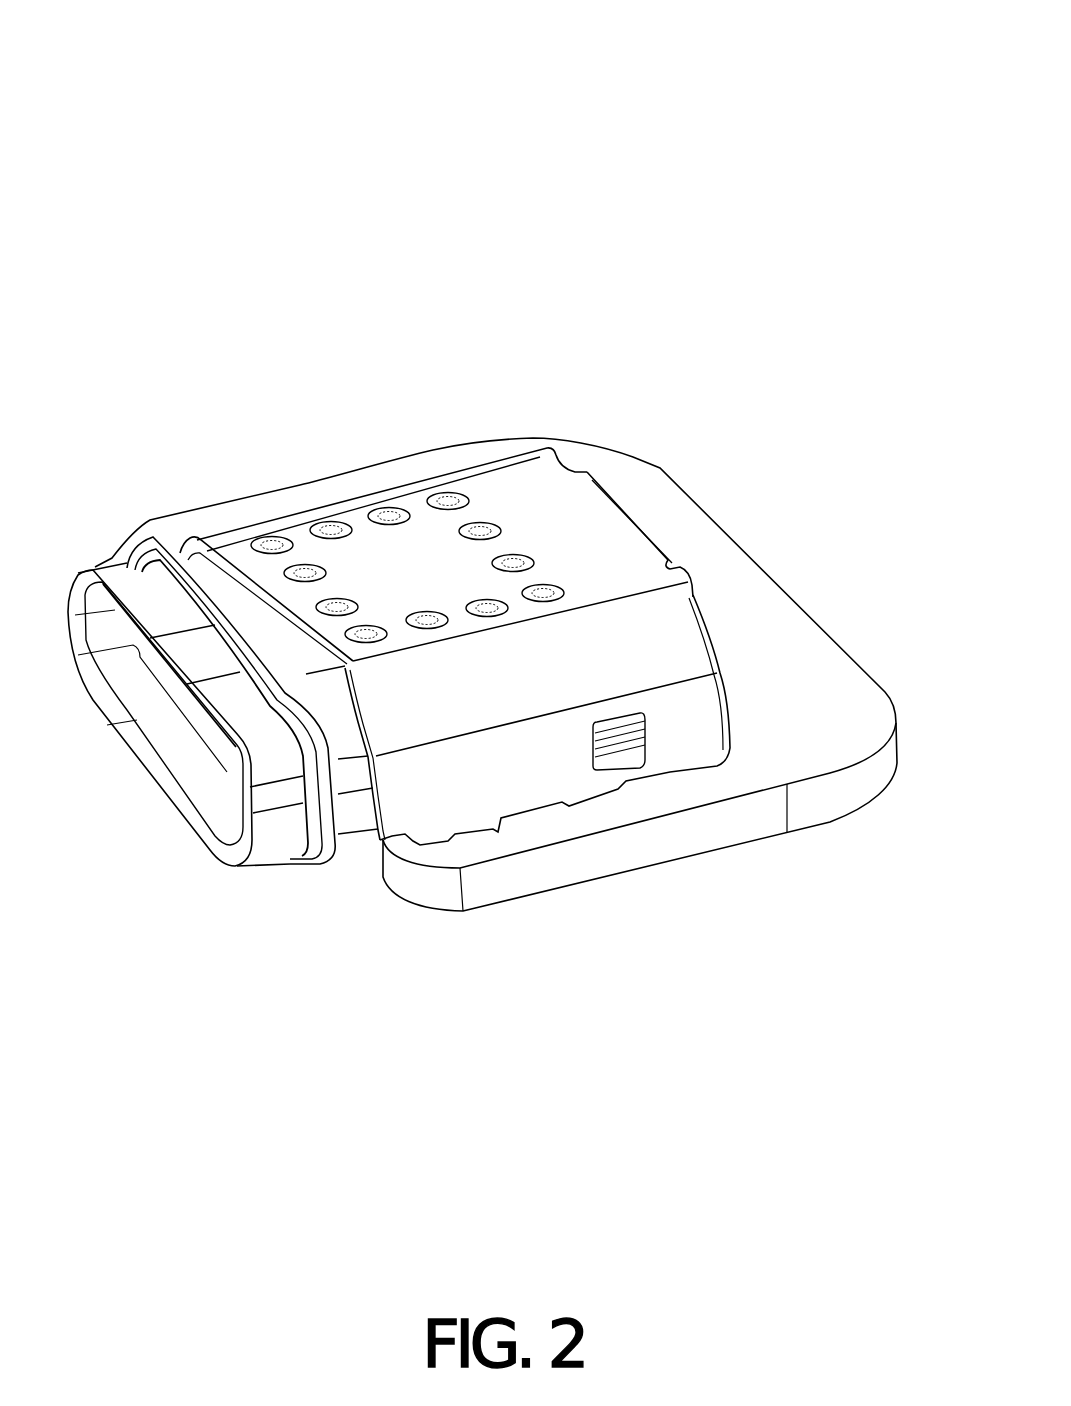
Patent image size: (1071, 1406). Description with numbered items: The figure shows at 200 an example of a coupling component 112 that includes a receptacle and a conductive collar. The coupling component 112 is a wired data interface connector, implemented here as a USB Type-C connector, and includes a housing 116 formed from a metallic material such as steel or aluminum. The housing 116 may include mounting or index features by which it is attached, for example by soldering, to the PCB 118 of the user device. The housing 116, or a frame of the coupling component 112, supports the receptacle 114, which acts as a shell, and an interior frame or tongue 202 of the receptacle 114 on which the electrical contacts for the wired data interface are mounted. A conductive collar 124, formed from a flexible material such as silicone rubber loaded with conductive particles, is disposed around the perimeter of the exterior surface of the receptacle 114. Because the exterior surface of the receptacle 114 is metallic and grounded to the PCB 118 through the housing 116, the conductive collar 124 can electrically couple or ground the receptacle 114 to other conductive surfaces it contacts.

The example of the coupling component 200 is at (488, 458).
The coupling component 112 is at (400, 612).
The receptacle 114 is at (210, 728).
The housing 116 is at (626, 508).
The PCB 118 is at (838, 642).
The conductive collar 124 is at (177, 541).
The tongue 202 is at (188, 718).